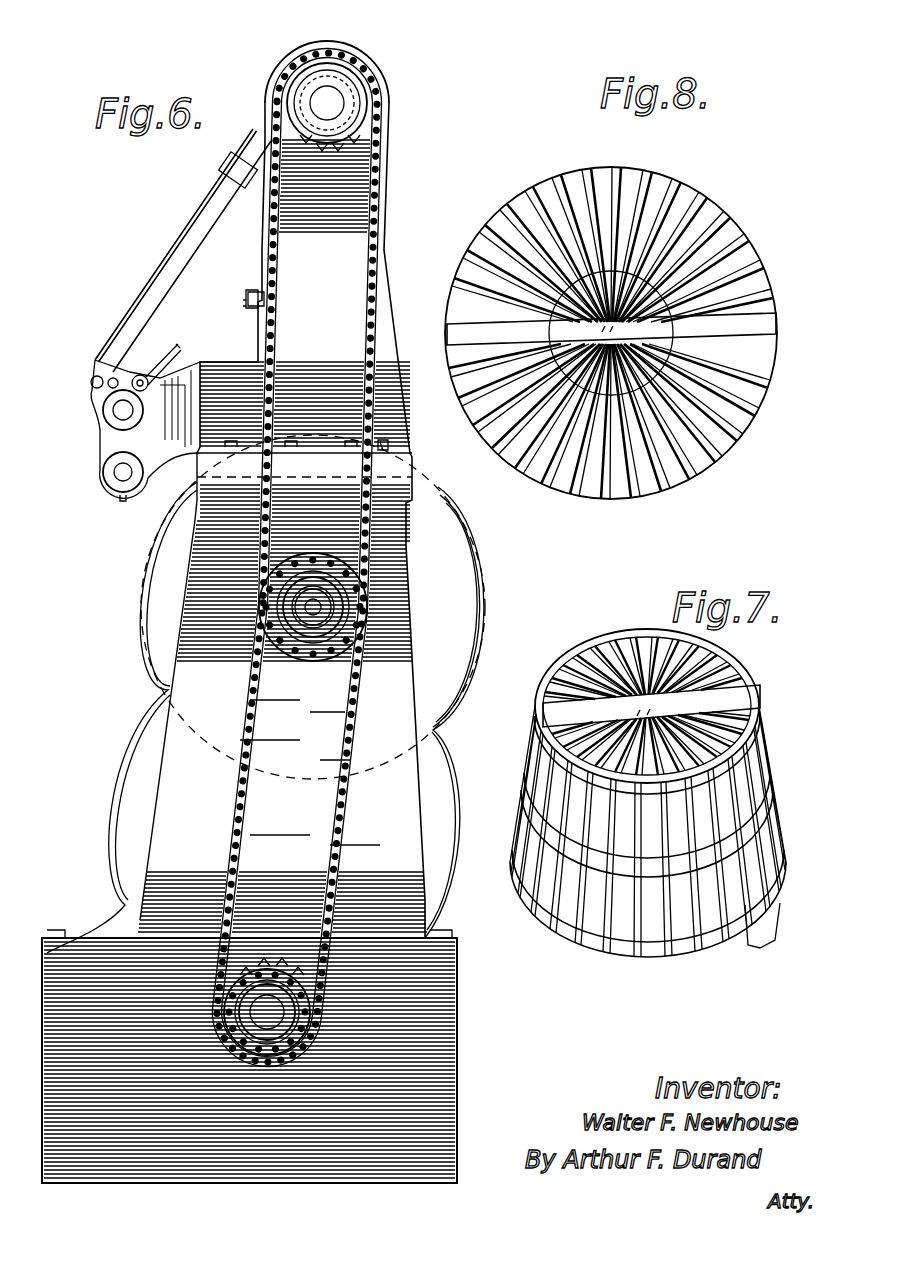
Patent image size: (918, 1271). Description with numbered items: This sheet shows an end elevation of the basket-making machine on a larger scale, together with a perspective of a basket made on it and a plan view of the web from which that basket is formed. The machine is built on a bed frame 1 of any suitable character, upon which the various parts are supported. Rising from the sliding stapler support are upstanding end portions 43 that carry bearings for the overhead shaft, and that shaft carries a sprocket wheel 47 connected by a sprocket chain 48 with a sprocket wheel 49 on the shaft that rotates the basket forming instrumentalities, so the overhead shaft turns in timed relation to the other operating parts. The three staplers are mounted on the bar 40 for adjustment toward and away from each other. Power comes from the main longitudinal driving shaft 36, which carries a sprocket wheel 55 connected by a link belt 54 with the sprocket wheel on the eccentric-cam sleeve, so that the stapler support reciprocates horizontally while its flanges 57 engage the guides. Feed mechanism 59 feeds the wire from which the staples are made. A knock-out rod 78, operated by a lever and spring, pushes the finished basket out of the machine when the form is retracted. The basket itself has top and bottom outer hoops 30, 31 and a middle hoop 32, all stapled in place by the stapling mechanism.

In FIG. 6, the bed frame 1 is at (457, 1032).
In FIG. 6, the upstanding end portions 43 is at (386, 338).
In FIG. 6, the sprocket wheel 47 is at (352, 126).
In FIG. 6, the sprocket chain 48 is at (383, 196).
In FIG. 6, the bar 40 is at (247, 308).
In FIG. 6, the sprocket wheel 49 is at (340, 602).
In FIG. 6, the knock-out rod 78 is at (318, 609).
In FIG. 6, the link belt 54 is at (350, 790).
In FIG. 6, the sprocket wheel 55 is at (267, 1006).
In FIG. 6, the main longitudinal driving shaft 36 is at (267, 1012).
In FIG. 6, the feed mechanism 59 is at (110, 418).
In FIG. 6, the flanges 57 is at (414, 452).
In FIG. 7, the bottom outer hoop 31 is at (756, 726).
In FIG. 7, the middle hoop 32 is at (770, 791).
In FIG. 7, the top outer hoop 30 is at (714, 943).